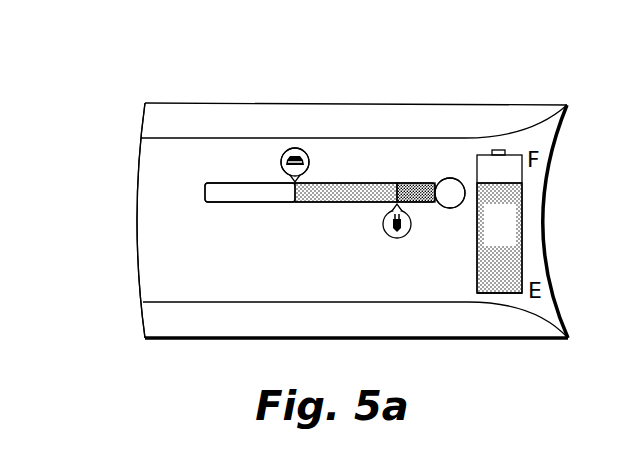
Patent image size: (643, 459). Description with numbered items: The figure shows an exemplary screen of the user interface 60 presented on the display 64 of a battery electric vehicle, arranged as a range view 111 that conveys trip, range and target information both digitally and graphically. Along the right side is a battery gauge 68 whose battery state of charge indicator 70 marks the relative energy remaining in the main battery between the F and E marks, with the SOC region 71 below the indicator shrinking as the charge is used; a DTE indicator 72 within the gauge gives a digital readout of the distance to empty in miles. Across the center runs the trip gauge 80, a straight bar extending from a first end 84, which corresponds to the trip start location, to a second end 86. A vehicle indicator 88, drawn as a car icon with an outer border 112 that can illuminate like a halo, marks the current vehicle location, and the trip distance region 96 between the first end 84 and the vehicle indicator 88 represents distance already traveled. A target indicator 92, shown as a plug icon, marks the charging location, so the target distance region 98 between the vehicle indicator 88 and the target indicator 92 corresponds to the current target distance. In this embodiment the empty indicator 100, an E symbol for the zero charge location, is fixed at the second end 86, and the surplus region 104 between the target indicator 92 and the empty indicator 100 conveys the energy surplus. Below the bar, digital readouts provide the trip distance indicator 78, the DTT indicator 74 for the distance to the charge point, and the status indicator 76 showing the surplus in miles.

The user interface 60 is at (132, 43).
The display 64 is at (138, 312).
The battery gauge 68 is at (512, 153).
The battery state of charge indicator 70 is at (517, 180).
The SOC region 71 is at (500, 292).
The DTE indicator 72 is at (523, 231).
The DTT indicator 74 is at (322, 308).
The status indicator 76 is at (427, 308).
The trip distance indicator 78 is at (230, 308).
The trip gauge 80 is at (155, 178).
The first end 84 is at (203, 192).
The second end 86 is at (436, 185).
The vehicle indicator 88 is at (293, 148).
The target indicator 92 is at (383, 226).
The trip distance region 96 is at (252, 190).
The target distance region 98 is at (353, 185).
The empty indicator 100 is at (447, 182).
The surplus region 104 is at (418, 185).
The range view 111 is at (162, 233).
The outer border 112 is at (277, 163).